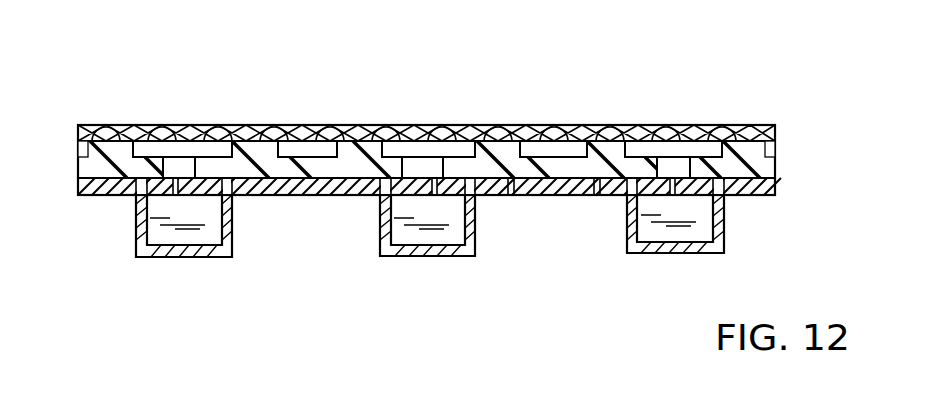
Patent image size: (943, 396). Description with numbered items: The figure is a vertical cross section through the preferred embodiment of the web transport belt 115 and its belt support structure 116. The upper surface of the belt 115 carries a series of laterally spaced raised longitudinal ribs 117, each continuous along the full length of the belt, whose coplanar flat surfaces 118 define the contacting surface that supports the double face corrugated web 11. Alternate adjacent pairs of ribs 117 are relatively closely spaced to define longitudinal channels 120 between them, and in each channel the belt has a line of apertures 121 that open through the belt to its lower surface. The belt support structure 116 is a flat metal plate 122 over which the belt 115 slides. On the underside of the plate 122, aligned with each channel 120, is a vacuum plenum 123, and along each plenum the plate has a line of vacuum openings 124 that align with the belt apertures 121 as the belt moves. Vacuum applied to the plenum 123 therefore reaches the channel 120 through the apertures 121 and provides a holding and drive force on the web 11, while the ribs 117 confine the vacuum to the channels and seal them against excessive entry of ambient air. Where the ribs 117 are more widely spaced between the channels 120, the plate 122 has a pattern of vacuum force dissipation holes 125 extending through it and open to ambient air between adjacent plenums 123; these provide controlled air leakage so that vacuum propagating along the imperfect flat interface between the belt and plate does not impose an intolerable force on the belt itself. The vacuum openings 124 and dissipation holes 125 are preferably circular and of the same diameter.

The double face corrugated web 11 is at (305, 140).
The web transport belt 115 is at (268, 135).
The belt support structure 116 is at (307, 197).
The raised longitudinal ribs 117 is at (110, 147).
The flat surfaces 118 is at (352, 133).
The longitudinal channels 120 is at (152, 150).
The apertures 121 is at (167, 166).
The flat metal plate 122 is at (113, 197).
The vacuum plenum 123 is at (167, 237).
The vacuum openings 124 is at (432, 183).
The vacuum force dissipation holes 125 is at (510, 195).